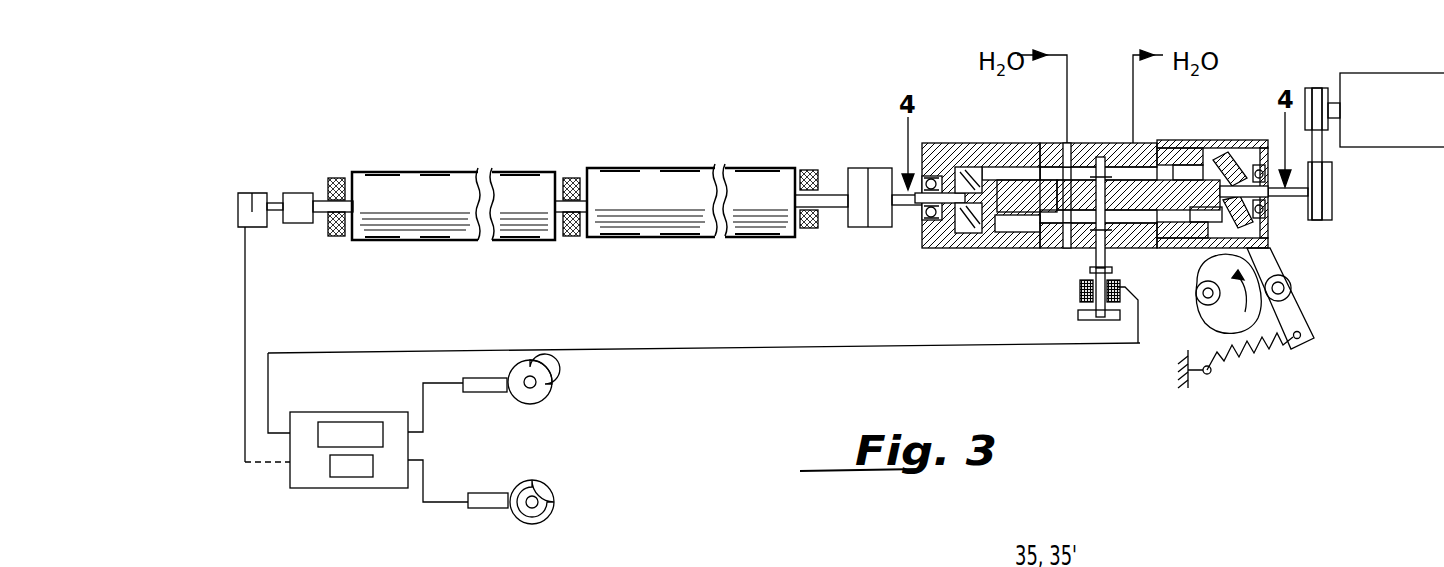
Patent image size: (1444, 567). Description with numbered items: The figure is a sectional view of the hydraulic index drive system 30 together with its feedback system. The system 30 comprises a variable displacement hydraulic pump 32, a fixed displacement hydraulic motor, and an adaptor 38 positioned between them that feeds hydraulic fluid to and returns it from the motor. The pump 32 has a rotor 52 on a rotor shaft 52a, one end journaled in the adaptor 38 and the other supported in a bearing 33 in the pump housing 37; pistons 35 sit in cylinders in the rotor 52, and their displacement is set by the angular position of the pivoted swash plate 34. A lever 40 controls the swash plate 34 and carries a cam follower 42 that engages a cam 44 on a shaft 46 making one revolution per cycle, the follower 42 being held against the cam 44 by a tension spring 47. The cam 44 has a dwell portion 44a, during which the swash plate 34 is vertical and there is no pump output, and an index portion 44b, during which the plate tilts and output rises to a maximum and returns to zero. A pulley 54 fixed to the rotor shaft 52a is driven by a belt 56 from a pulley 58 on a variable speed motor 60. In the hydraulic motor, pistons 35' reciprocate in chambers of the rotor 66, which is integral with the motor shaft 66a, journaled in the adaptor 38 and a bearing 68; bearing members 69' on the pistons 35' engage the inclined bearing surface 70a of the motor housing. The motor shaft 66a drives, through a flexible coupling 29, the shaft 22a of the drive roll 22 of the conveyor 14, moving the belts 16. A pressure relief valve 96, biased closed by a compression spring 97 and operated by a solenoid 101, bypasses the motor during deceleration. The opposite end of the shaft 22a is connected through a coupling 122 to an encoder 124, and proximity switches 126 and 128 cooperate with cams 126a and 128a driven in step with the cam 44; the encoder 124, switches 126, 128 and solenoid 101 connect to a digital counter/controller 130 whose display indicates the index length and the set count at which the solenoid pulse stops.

The conveyor 14 is at (520, 141).
The belts 16 is at (607, 168).
The drive roll 22 is at (740, 190).
The shaft of the drive roll 22a is at (323, 215).
The flexible coupling 29 is at (862, 168).
The hydraulic index drive system 30 is at (964, 106).
The variable displacement hydraulic pump 32 is at (1210, 142).
The bearing 33 is at (1273, 200).
The swash plate 34 is at (1272, 248).
The pistons 35 is at (1187, 193).
The pistons 35' is at (1031, 186).
The pump housing 37 is at (1247, 141).
The adaptor 38 is at (1118, 143).
The lever 40 is at (1293, 317).
The cam follower 42 is at (1291, 287).
The cam 44 is at (1242, 317).
The dwell portion 44a is at (1202, 306).
The index portion 44b is at (1302, 330).
The shaft 46 is at (1196, 293).
The tension spring 47 is at (1257, 357).
The rotor 52 is at (1186, 176).
The rotor shaft 52a is at (1300, 200).
The pulley 54 is at (1332, 192).
The belt 56 is at (1318, 145).
The pulley 58 is at (1307, 90).
The variable speed motor 60 is at (1408, 83).
The rotor 66 is at (1010, 205).
The motor shaft 66a is at (955, 210).
The bearing 68 is at (922, 215).
The bearing members 69' is at (943, 146).
The inclined bearing surface 70a is at (966, 180).
The pressure relief valve 96 is at (1078, 160).
The compression spring 97 is at (1107, 250).
The solenoid 101 is at (1078, 293).
The coupling 122 is at (300, 196).
The encoder 124 is at (253, 193).
The proximity switch 126 is at (483, 392).
The cam 126a is at (553, 383).
The proximity switch 128 is at (490, 508).
The cam 128a is at (555, 513).
The digital counter/controller 130 is at (315, 475).